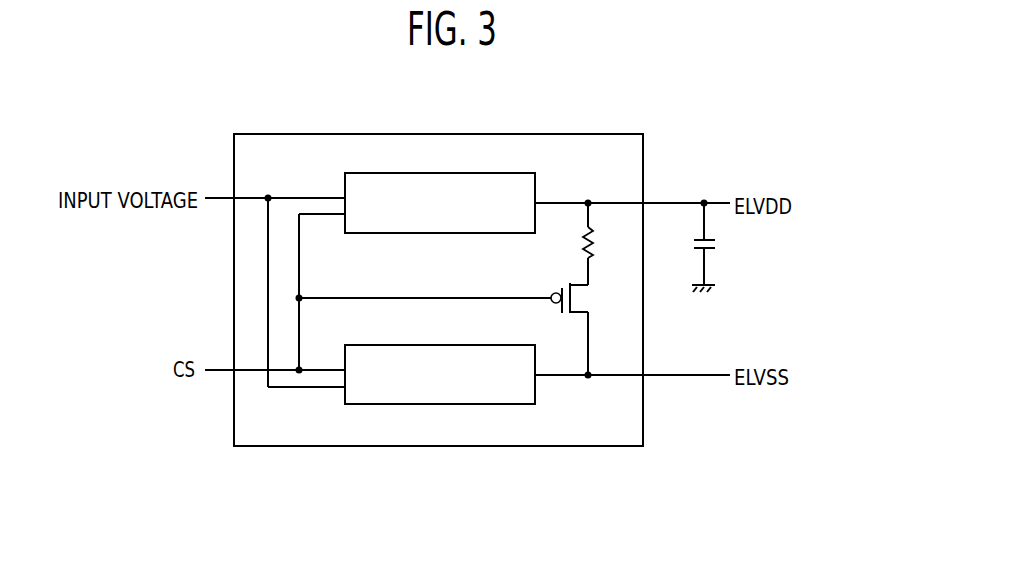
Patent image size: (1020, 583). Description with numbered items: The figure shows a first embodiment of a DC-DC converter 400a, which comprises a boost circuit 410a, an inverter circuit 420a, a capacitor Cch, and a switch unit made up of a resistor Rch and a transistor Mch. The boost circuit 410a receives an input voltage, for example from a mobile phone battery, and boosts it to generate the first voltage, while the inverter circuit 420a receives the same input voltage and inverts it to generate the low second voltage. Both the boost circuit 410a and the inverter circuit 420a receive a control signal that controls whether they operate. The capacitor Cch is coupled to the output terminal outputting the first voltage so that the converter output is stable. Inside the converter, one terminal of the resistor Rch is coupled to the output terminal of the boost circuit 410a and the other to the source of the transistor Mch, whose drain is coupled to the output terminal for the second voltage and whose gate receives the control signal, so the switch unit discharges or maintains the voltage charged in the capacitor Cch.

The DC-DC converter 400a is at (670, 92).
The boost circuit 410a is at (437, 173).
The inverter circuit 420a is at (440, 404).
The resistor Rch is at (569, 242).
The transistor Mch is at (589, 300).
The capacitor Cch is at (723, 247).